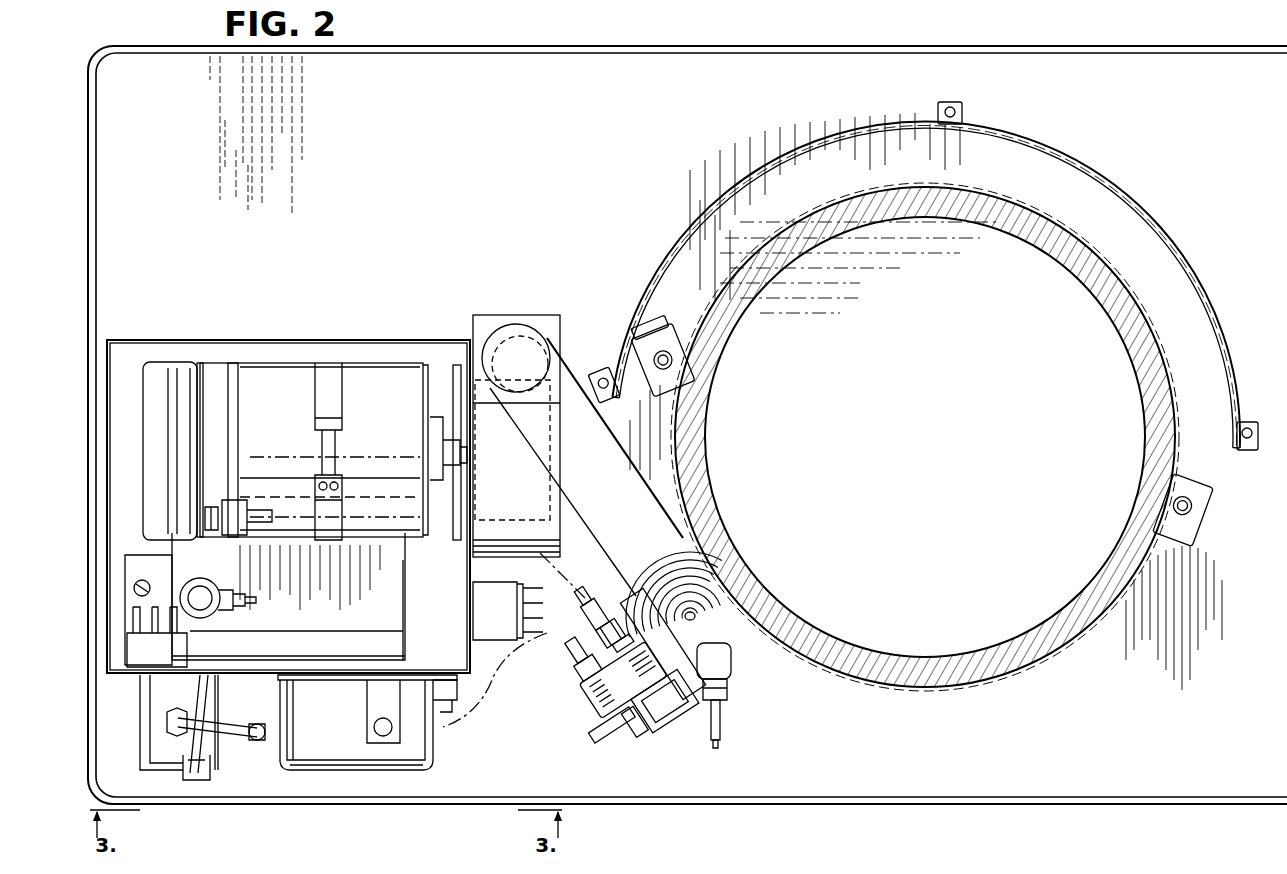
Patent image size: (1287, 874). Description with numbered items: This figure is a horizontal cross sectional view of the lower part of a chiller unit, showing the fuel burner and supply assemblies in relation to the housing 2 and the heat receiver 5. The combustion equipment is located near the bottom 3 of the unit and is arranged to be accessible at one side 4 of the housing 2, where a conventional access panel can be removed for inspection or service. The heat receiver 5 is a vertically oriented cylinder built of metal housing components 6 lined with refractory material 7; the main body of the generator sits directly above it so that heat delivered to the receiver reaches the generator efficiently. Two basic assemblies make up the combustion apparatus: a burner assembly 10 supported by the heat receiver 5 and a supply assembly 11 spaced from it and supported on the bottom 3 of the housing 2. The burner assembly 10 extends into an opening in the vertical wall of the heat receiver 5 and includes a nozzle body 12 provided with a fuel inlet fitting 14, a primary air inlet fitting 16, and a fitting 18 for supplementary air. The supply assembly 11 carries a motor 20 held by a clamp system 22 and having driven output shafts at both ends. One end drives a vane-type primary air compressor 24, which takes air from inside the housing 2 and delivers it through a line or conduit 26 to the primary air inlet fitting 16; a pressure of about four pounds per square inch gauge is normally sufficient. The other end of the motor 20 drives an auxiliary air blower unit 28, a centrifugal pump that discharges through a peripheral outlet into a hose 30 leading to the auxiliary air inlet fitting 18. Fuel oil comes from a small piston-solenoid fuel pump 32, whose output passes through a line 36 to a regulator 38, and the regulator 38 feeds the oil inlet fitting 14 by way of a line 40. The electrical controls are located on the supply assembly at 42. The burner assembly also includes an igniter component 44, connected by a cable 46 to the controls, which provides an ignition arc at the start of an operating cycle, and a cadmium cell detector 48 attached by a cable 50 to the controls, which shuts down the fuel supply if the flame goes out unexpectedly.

The housing 2 is at (85, 440).
The bottom 3 is at (334, 262).
The side 4 is at (437, 778).
The heat receiver 5 is at (1174, 441).
The metal housing components 6 is at (1178, 462).
The refractory material 7 is at (1140, 500).
The burner assembly 10 is at (672, 730).
The supply assembly 11 is at (380, 773).
The nozzle body 12 is at (592, 696).
The fuel inlet fitting 14 is at (585, 678).
The primary air inlet fitting 16 is at (590, 640).
The auxiliary air inlet fitting 18 is at (718, 600).
The motor 20 is at (381, 442).
The clamp system 22 is at (316, 404).
The primary air pump or compressor 24 is at (153, 467).
The line or conduit 26 is at (258, 536).
The auxiliary air blower unit 28 is at (514, 314).
The hose 30 is at (563, 356).
The fuel pump 32 is at (155, 741).
The line 36 is at (236, 742).
The regulator 38 is at (367, 737).
The line 40 is at (572, 663).
The electrical control system 42 is at (420, 627).
The igniter component 44 is at (730, 689).
The cable 46 is at (722, 728).
The detector 48 is at (641, 732).
The cable 50 is at (605, 742).